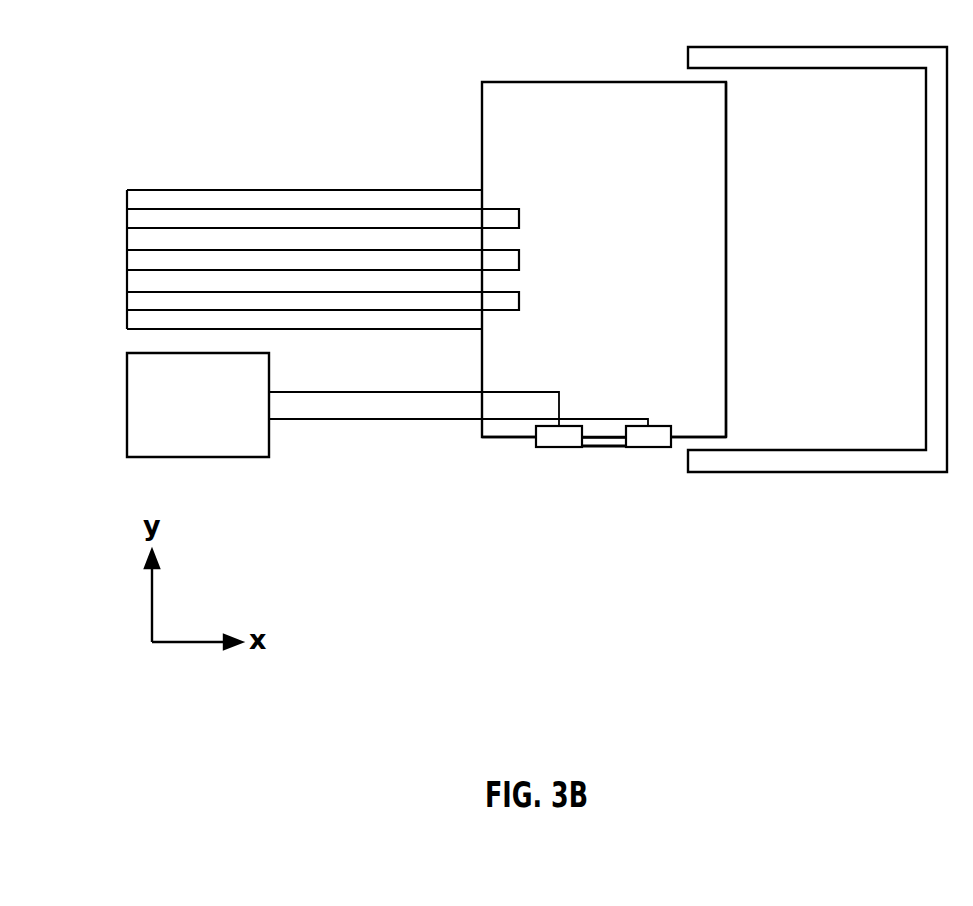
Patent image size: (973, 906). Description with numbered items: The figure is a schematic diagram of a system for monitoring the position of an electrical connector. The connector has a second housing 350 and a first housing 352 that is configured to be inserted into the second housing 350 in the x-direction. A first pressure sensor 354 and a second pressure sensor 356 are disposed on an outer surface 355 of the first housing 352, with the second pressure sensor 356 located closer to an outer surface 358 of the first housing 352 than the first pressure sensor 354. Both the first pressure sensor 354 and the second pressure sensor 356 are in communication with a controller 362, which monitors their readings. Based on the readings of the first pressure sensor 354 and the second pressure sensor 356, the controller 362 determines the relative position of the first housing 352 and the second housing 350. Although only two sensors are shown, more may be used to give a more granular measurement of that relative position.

The second housing 350 is at (807, 47).
The first housing 352 is at (503, 81).
The first pressure sensor 354 is at (559, 447).
The outer surface 355 is at (493, 437).
The second pressure sensor 356 is at (648, 447).
The outer surface 358 is at (726, 262).
The controller 362 is at (220, 419).